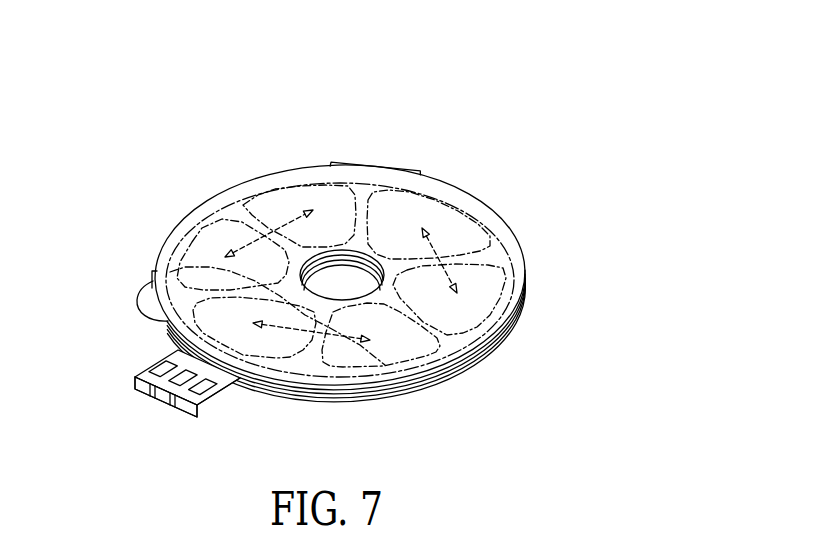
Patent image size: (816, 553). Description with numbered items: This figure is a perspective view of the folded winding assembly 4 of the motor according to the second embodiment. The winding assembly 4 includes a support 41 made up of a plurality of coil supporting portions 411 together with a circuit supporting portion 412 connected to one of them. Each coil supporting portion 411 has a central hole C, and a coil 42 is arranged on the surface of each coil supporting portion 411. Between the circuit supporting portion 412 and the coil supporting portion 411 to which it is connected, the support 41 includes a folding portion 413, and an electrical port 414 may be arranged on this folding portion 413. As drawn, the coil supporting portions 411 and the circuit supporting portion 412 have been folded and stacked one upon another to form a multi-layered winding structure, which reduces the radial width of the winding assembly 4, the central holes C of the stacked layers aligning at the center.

The winding assembly 4 is at (430, 83).
The support 41 is at (212, 177).
The coil 42 is at (203, 226).
The coil supporting portion 411 is at (163, 265).
The circuit supporting portion 412 is at (137, 294).
The folding portion 413 is at (130, 376).
The electrical port 414 is at (186, 408).
The central hole C is at (331, 262).